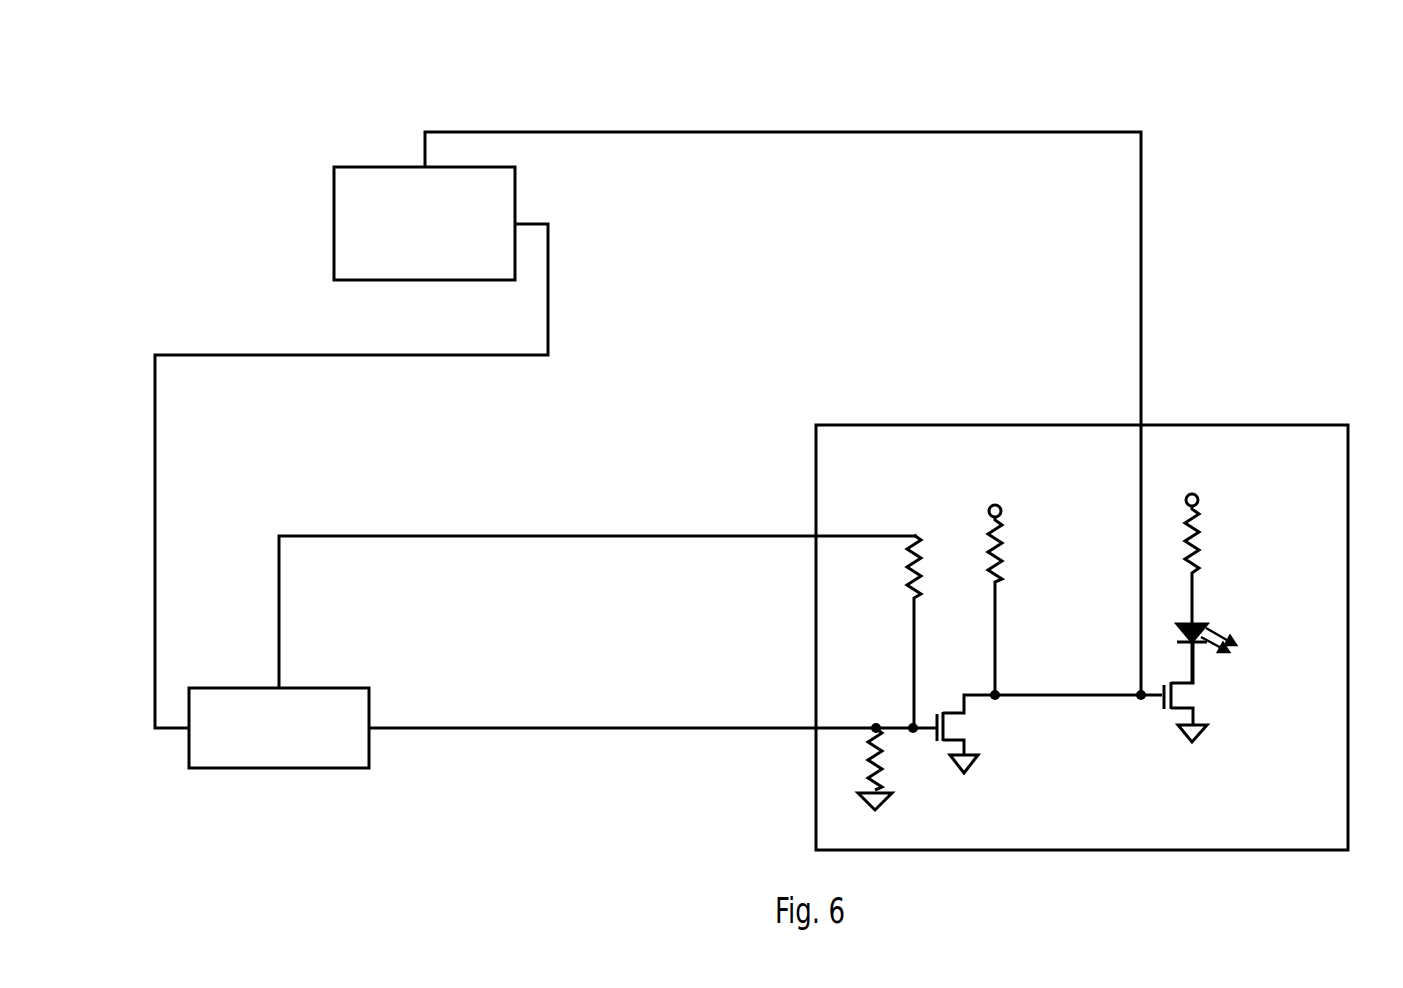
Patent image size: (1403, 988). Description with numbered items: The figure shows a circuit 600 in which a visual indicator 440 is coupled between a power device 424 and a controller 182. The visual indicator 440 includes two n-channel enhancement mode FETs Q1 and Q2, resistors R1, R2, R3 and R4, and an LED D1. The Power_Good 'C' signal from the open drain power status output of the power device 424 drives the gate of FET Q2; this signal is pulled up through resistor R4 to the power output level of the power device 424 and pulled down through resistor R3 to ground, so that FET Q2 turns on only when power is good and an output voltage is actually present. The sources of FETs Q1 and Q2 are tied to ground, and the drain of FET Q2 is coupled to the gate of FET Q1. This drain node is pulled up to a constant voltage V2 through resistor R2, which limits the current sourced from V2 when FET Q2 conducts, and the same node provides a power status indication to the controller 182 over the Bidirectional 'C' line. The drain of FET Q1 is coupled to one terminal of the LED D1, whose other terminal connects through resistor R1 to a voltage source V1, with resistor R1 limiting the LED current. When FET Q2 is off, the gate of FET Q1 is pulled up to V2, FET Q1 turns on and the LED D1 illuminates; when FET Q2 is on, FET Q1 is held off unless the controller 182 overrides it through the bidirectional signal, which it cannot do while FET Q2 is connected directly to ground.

The circuit 600 is at (747, 36).
The controller 182 is at (494, 269).
The power device 424 is at (313, 757).
The visual indicator 440 is at (1198, 832).
The resistor R1 is at (1217, 565).
The resistor R2 is at (1015, 606).
The resistor R3 is at (859, 769).
The resistor R4 is at (893, 631).
The FET Q1 is at (1189, 694).
The FET Q2 is at (1029, 732).
The LED D1 is at (1229, 653).
The voltage source V1 is at (1195, 483).
The constant voltage V2 is at (996, 495).